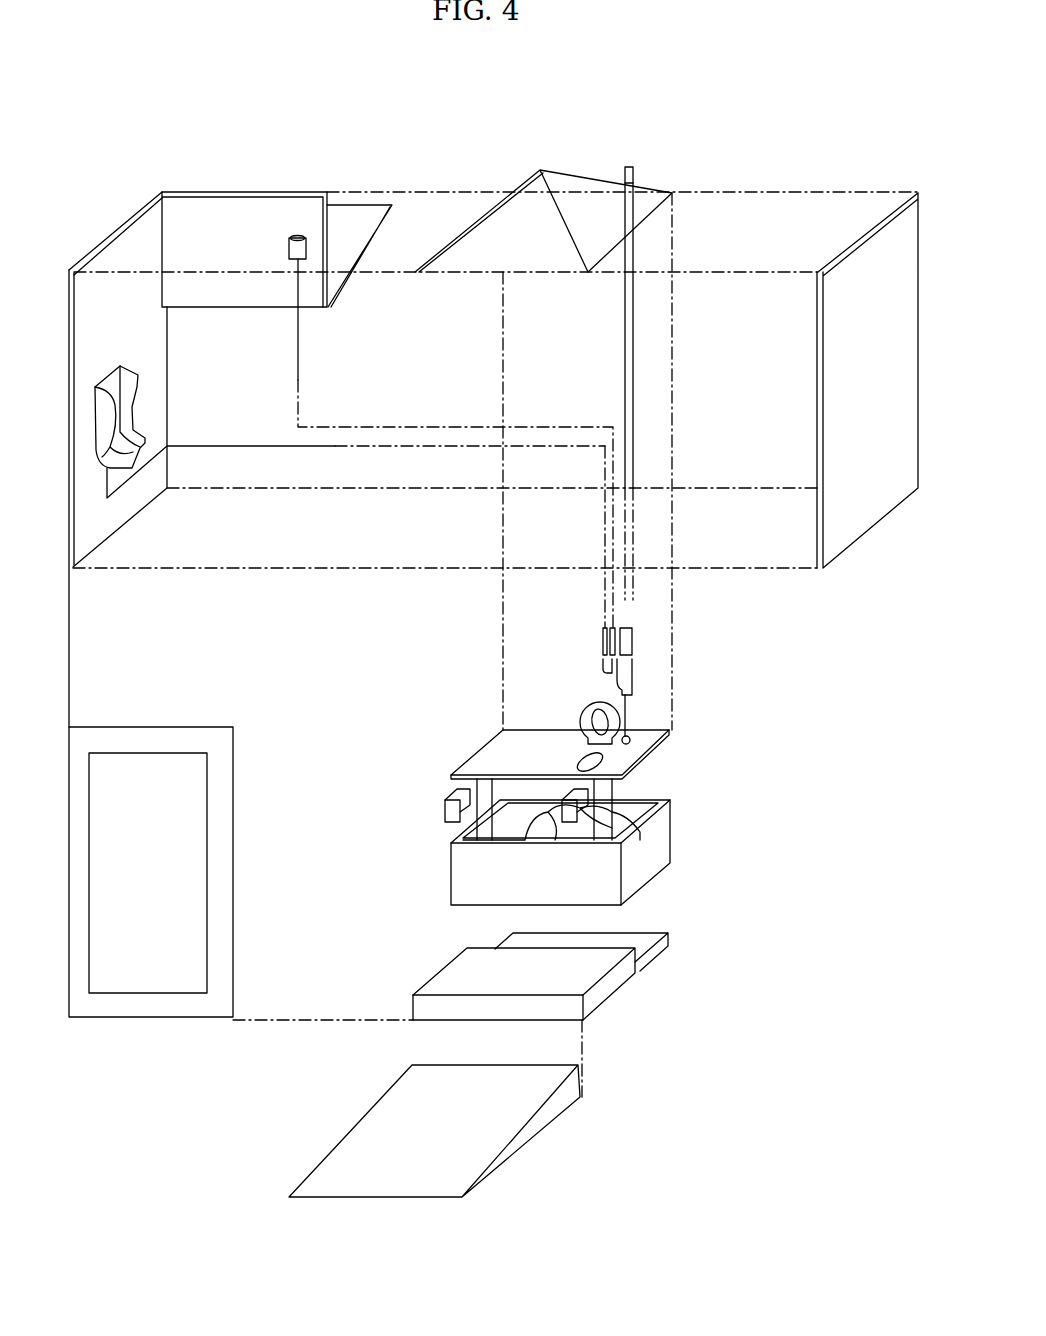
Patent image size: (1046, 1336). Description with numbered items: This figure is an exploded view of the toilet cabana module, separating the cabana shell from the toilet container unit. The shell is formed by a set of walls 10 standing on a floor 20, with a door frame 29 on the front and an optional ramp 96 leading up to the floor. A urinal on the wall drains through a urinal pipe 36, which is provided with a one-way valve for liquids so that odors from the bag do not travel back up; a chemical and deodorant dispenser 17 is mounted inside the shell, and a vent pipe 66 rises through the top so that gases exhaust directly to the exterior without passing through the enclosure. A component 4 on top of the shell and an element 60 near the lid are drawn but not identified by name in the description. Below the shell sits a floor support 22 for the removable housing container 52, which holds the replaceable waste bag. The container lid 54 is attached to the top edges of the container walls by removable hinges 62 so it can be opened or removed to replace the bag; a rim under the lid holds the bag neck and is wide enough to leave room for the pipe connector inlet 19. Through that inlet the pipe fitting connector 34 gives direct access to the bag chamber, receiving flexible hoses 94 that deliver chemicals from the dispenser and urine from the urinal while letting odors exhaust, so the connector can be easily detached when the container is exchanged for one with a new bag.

The hood 4 is at (553, 168).
The walls 10 is at (853, 548).
The chemical and deodorant dispenser 17 is at (287, 250).
The pipe connector inlet 19 is at (637, 737).
The floor 20 is at (548, 981).
The floor support 22 is at (643, 930).
The door frame 29 is at (142, 720).
The pipe fitting connector 34 is at (638, 673).
The urinal pipe 36 is at (255, 440).
The removable housing container 52 is at (670, 843).
The container lid 54 is at (663, 743).
The cap 60 is at (603, 755).
The removable hinges 62 is at (445, 812).
The vent pipe 66 is at (628, 165).
The flexible hoses 94 is at (603, 651).
The ramp 96 is at (452, 1151).